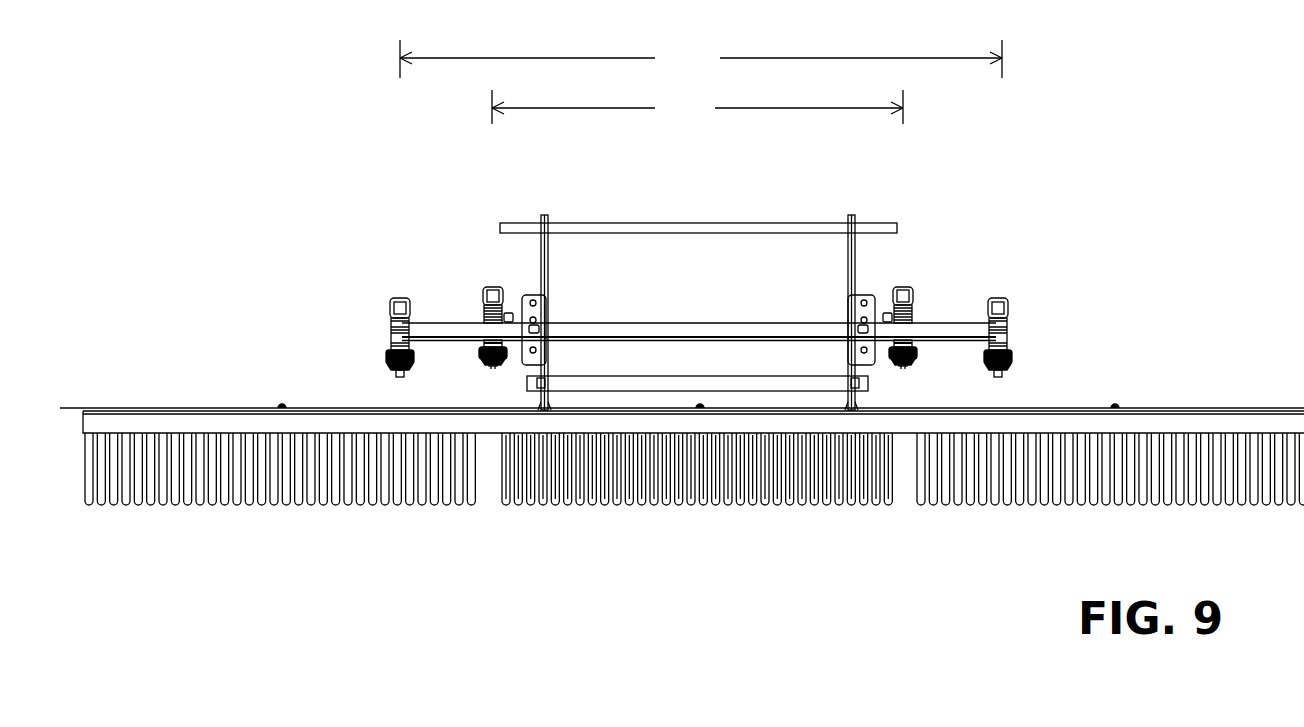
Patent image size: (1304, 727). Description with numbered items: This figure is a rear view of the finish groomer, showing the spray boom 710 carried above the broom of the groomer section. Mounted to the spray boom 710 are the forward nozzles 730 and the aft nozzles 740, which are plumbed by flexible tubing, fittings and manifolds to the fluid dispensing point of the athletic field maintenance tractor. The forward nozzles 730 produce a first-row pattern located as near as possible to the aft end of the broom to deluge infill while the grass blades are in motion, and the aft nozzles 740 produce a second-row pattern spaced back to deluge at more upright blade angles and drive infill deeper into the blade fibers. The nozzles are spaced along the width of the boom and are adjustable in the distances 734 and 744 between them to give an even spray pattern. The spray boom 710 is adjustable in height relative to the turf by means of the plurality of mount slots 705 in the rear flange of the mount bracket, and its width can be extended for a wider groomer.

The mount slots 705 is at (540, 329).
The spray boom 710 is at (696, 330).
The forward nozzles 730 is at (487, 293).
The aft nozzles 740 is at (393, 308).
The distance between spray nozzles 734 is at (697, 107).
The distance between spray nozzles 744 is at (701, 59).